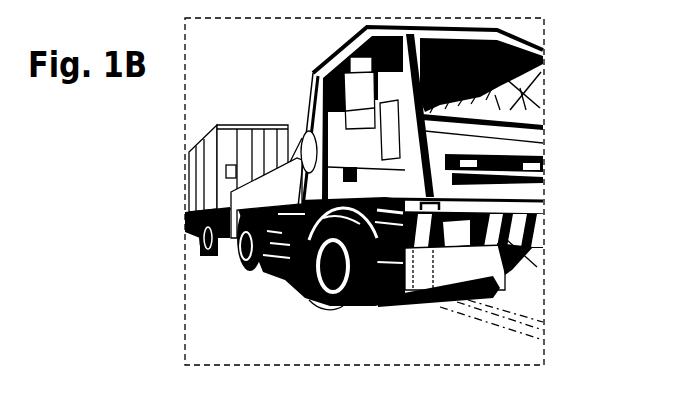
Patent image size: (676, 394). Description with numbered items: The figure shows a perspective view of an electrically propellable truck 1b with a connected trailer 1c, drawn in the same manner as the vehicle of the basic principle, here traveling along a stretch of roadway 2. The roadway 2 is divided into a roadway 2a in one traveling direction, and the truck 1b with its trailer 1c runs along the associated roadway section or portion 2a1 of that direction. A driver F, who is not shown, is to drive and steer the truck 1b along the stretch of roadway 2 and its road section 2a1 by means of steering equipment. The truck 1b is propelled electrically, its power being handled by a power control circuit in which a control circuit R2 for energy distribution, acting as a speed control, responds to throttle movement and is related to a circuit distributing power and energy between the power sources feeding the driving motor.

The truck 1b is at (343, 48).
The trailer 1c is at (249, 126).
The driver F is at (533, 84).
The stretch of roadway 2 is at (258, 311).
The control circuit for energy distribution R2 is at (302, 299).
The roadway in one traveling direction 2a is at (536, 308).
The roadway section in one traveling direction 2a1 is at (490, 323).